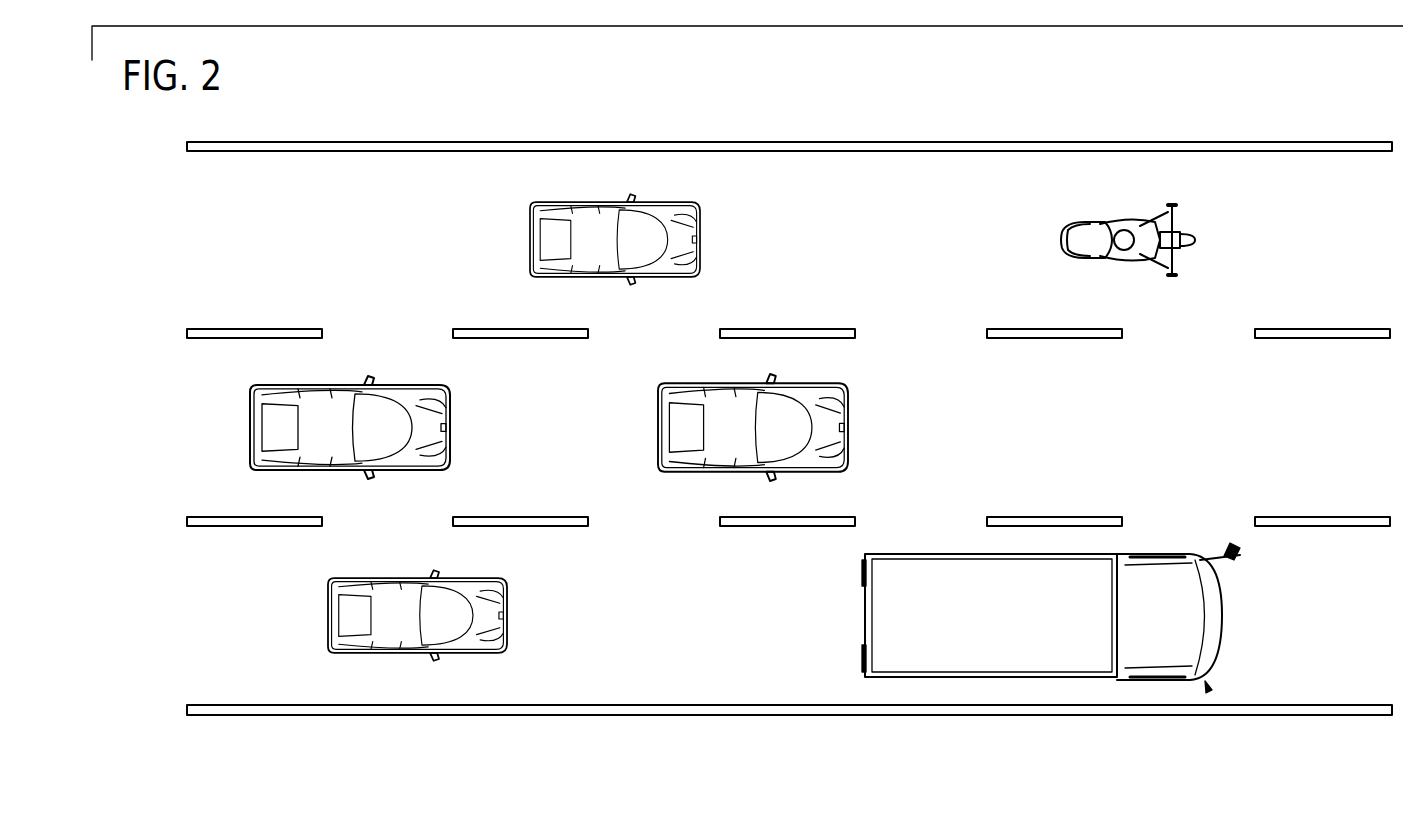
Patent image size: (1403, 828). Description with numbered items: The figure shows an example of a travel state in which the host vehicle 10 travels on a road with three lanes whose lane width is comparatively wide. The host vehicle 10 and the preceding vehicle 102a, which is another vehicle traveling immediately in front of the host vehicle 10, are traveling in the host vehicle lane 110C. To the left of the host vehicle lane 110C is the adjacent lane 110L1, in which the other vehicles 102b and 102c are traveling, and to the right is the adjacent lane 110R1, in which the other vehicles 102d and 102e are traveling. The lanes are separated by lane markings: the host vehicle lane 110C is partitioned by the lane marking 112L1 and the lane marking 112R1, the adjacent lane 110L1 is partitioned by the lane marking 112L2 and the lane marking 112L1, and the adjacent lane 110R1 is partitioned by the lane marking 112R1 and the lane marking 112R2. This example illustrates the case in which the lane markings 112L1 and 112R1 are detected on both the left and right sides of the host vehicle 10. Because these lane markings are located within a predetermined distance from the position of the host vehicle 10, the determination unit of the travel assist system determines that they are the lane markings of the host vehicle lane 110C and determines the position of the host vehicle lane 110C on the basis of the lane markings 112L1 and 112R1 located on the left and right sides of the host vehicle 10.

The host vehicle 10 is at (432, 400).
The preceding vehicle 102a is at (845, 401).
The other vehicle 102b is at (1060, 234).
The other vehicle 102c is at (530, 225).
The other vehicle 102d is at (878, 612).
The other vehicle 102e is at (393, 647).
The adjacent lane 110L1 is at (200, 207).
The host vehicle lane 110C is at (200, 388).
The adjacent lane 110R1 is at (200, 590).
The lane marking 112L2 is at (187, 146).
The lane marking 112L1 is at (187, 334).
The lane marking 112R1 is at (187, 523).
The lane marking 112R2 is at (187, 712).